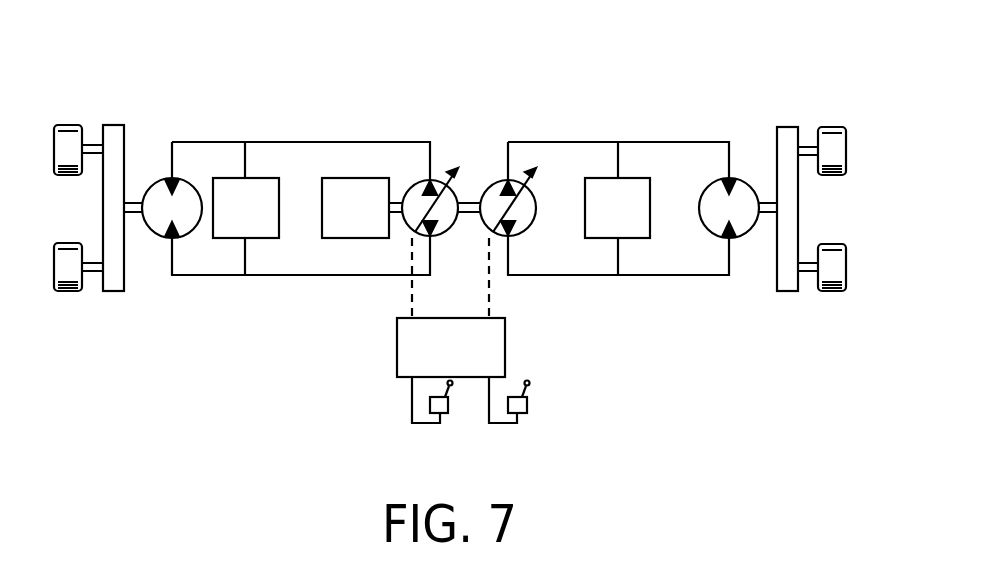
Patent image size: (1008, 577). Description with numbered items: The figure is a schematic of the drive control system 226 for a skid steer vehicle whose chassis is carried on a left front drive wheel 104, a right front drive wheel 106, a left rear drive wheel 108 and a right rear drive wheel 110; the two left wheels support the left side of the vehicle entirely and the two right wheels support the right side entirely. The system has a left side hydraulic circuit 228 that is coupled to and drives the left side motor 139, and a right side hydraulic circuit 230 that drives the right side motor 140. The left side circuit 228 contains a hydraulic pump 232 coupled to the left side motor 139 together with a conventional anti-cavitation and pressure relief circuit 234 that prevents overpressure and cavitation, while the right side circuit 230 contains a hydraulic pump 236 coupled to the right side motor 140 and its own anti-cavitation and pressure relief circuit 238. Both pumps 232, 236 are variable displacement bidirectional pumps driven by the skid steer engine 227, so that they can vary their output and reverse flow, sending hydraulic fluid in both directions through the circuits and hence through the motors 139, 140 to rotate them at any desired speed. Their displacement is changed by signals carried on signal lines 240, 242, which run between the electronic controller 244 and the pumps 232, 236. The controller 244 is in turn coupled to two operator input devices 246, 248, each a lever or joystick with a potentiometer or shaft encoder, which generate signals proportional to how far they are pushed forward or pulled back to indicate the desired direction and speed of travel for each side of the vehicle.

The left front drive wheel 104 is at (56, 136).
The right front drive wheel 106 is at (834, 127).
The left rear drive wheel 108 is at (56, 285).
The right rear drive wheel 110 is at (833, 292).
The left side hydraulic motor 139 is at (178, 181).
The right side hydraulic motor 140 is at (700, 200).
The drive control system 226 is at (241, 299).
The skid steer engine 227 is at (352, 178).
The left side hydraulic circuit 228 is at (300, 177).
The right side hydraulic circuit 230 is at (619, 172).
The hydraulic pump 232 is at (413, 183).
The anti-cavitation and pressure relief circuit 234 is at (281, 195).
The hydraulic pump 236 is at (490, 184).
The anti-cavitation and pressure relief circuit 238 is at (599, 178).
The signal line 240 is at (412, 303).
The signal line 242 is at (489, 302).
The electronic controller 244 is at (505, 335).
The operator input device 246 is at (448, 405).
The operator input device 248 is at (527, 405).